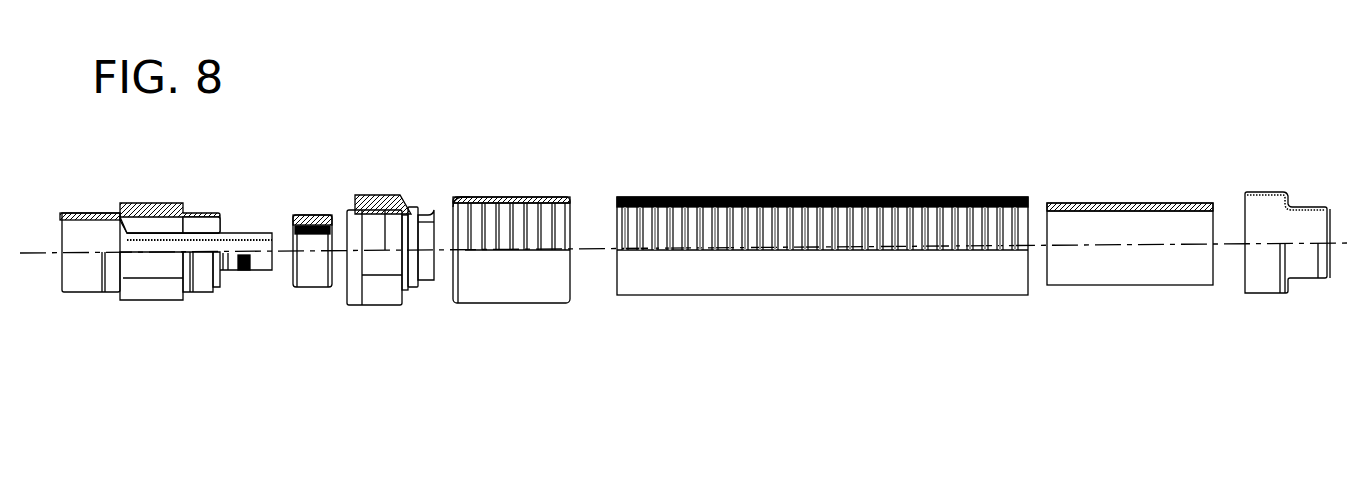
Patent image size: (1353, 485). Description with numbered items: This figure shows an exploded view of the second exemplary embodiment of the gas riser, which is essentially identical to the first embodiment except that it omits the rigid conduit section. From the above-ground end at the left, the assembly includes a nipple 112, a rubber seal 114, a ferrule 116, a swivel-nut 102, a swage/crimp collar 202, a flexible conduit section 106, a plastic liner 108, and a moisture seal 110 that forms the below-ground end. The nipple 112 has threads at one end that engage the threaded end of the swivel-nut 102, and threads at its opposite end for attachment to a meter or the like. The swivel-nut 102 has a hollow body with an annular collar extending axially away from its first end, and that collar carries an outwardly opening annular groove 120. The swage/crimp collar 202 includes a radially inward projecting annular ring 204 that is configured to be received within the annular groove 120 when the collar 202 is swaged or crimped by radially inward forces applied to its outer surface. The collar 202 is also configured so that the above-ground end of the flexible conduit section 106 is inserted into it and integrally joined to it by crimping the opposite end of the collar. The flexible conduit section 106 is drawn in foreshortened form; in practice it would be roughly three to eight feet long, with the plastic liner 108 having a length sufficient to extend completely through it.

The swivel-nut 102 is at (378, 302).
The flexible conduit section 106 is at (787, 288).
The plastic liner 108 is at (1138, 276).
The moisture seal 110 is at (1268, 284).
The nipple 112 is at (155, 290).
The rubber seal 114 is at (305, 287).
The ferrule 116 is at (280, 230).
The annular groove 120 is at (406, 181).
The swage/crimp collar 202 is at (487, 292).
The annular ring 204 is at (438, 214).